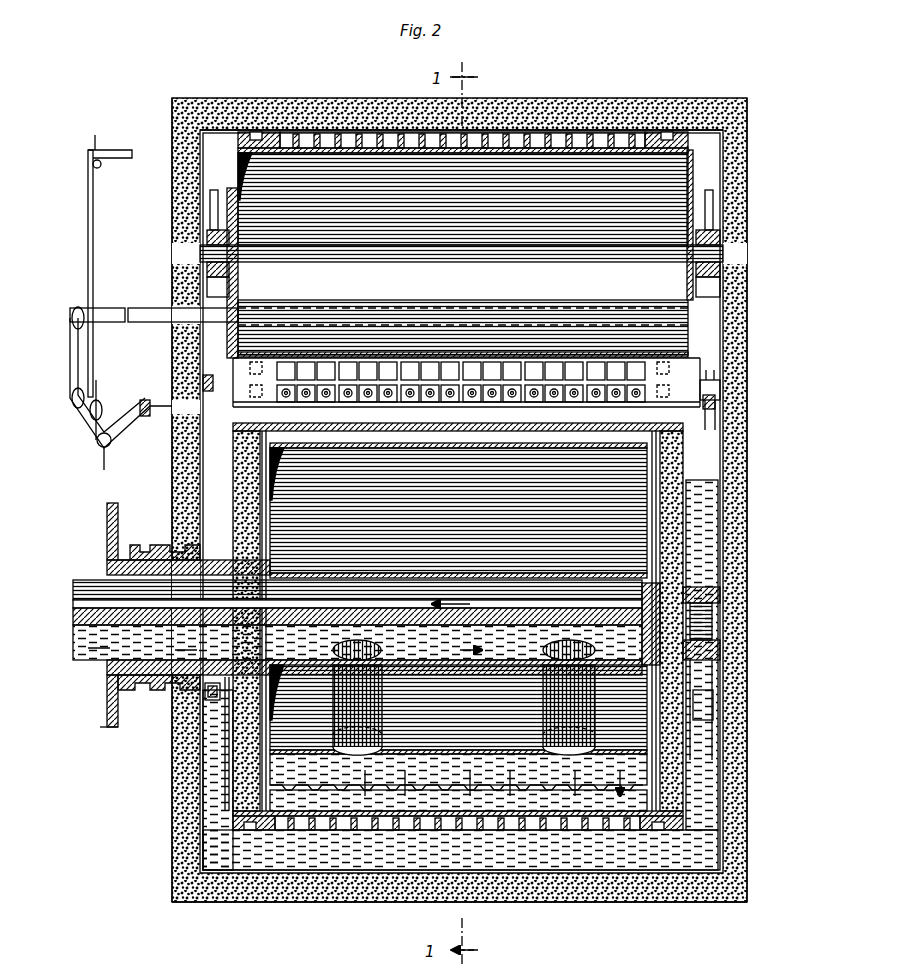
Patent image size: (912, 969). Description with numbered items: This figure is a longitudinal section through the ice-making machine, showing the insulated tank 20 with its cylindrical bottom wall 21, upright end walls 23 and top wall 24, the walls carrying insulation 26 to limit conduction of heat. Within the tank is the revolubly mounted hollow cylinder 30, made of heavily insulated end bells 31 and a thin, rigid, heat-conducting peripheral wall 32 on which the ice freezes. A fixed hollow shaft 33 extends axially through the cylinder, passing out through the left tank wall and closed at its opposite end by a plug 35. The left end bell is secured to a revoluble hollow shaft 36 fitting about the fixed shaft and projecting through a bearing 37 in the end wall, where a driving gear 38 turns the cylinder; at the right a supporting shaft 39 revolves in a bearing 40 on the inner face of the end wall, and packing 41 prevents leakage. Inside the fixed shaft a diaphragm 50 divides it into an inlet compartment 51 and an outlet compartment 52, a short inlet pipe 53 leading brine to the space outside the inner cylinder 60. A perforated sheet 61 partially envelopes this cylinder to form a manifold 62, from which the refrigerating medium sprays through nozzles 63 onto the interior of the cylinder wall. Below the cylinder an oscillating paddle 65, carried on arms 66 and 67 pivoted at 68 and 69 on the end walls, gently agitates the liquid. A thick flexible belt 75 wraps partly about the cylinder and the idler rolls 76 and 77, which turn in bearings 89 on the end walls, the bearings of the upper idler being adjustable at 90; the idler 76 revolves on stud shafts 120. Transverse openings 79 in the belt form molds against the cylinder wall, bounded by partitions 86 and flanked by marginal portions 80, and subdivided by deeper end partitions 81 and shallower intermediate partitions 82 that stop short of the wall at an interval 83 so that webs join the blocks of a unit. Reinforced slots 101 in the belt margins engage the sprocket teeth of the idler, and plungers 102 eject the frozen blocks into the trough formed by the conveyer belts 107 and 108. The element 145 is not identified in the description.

The tank 20 is at (748, 803).
The cylindrical bottom wall 21 is at (695, 898).
The end walls 23 is at (748, 335).
The top wall 24 is at (552, 128).
The insulation 26 is at (200, 760).
The hollow cylinder 30 is at (560, 440).
The end bells 31 is at (268, 497).
The peripheral wall 32 is at (420, 432).
The fixed hollow shaft 33 is at (418, 582).
The plug 35 is at (600, 578).
The revoluble hollow shaft 36 is at (280, 570).
The bearing 37 is at (200, 690).
The driving gear 38 is at (107, 522).
The supporting shaft 39 is at (722, 598).
The bearing 40 is at (700, 585).
The packing 41 is at (140, 545).
The diaphragm 50 is at (446, 626).
The inlet compartment 51 is at (490, 658).
The outlet compartment 52 is at (495, 580).
The inlet pipe 53 is at (384, 684).
The inner cylinder 60 is at (488, 442).
The perforated sheet 61 is at (400, 785).
The manifold 62 is at (495, 765).
The nozzles 63 is at (550, 815).
The oscillating paddle 65 is at (508, 860).
The arm 66 is at (723, 754).
The arm 67 is at (225, 790).
The pivot 68 is at (712, 696).
The pivot 69 is at (222, 690).
The flexible belt 75 is at (345, 135).
The idler roll 76 is at (238, 352).
The idler roll 77 is at (690, 163).
The openings 79 is at (532, 132).
The marginal portions 80 is at (270, 133).
The end partitions 81 is at (400, 132).
The intermediate partitions 82 is at (622, 132).
The interval 83 is at (425, 132).
The partitions 86 is at (420, 360).
The bearings 89 is at (206, 243).
The adjustment 90 is at (240, 208).
The slots 101 is at (256, 132).
The plungers 102 is at (286, 400).
The conveyer belt 107 is at (128, 322).
The conveyer belt 108 is at (119, 160).
The stud shafts 120 is at (200, 383).
The bracket plate 145 is at (210, 700).